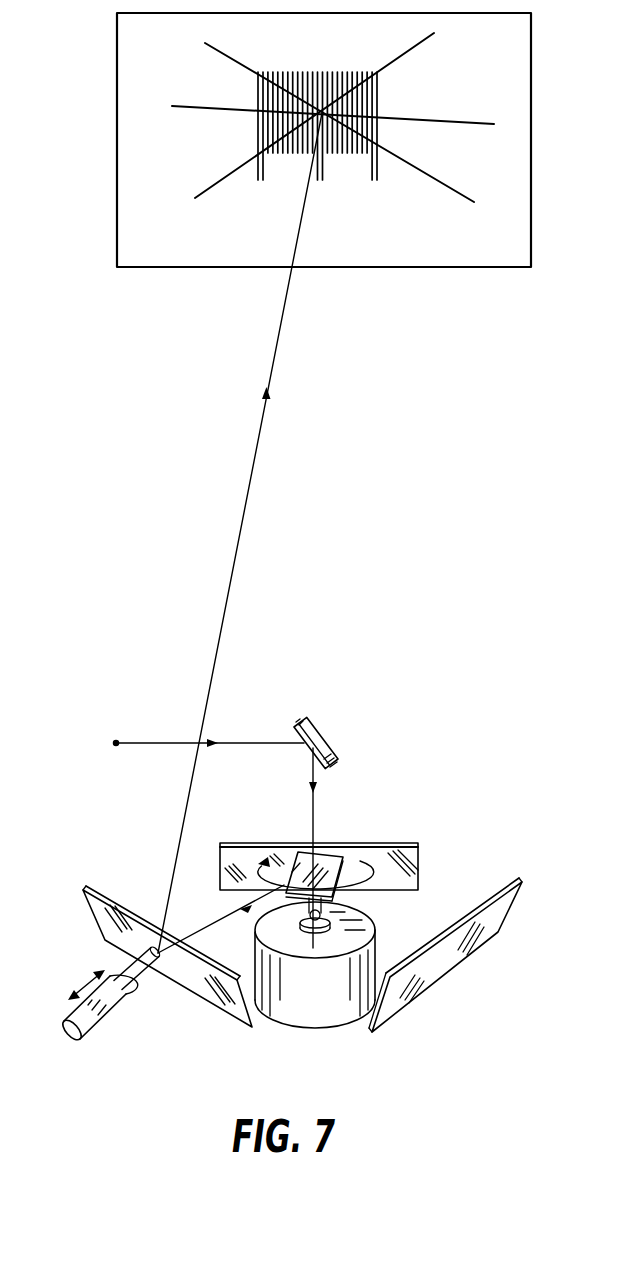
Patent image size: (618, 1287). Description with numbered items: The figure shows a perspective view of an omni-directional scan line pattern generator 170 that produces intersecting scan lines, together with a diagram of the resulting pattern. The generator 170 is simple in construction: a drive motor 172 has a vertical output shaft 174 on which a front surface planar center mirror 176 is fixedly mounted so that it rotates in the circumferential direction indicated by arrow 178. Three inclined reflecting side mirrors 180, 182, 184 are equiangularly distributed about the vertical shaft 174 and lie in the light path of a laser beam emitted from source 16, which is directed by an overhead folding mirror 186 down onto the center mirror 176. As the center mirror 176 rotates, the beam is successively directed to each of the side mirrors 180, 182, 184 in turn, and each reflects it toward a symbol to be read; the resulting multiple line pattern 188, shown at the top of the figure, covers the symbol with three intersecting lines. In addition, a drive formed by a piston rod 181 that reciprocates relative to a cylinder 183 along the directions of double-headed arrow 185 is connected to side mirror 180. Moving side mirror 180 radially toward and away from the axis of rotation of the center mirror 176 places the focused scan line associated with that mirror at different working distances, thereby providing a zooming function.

The source 16 is at (116, 741).
The omni-directional scan line pattern generator 170 is at (448, 808).
The drive motor 172 is at (312, 1002).
The vertical output shaft 174 is at (335, 909).
The front surface planar mirror 176 is at (330, 862).
The arrow 178 is at (283, 870).
The inclined reflecting side mirror 180 is at (105, 905).
The piston rod 181 is at (135, 983).
The inclined reflecting side mirror 182 is at (233, 853).
The cylinder 183 is at (97, 1033).
The inclined reflecting side mirror 184 is at (498, 905).
The double-headed arrow 185 is at (88, 978).
The overhead folding mirror 186 is at (318, 733).
The multiple line pattern 188 is at (158, 28).